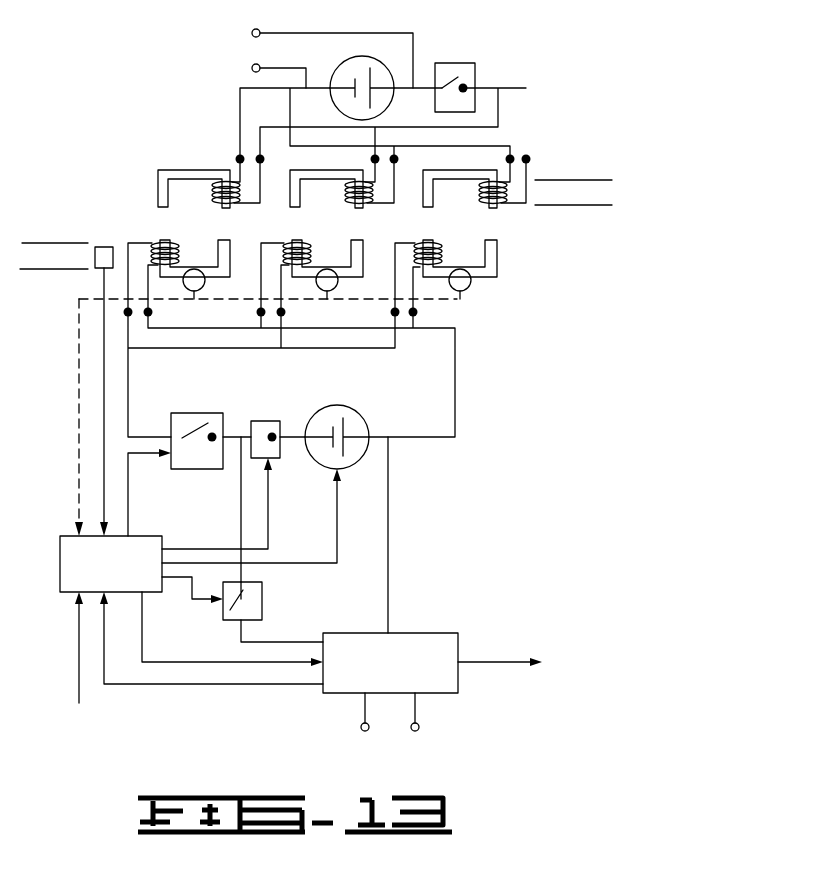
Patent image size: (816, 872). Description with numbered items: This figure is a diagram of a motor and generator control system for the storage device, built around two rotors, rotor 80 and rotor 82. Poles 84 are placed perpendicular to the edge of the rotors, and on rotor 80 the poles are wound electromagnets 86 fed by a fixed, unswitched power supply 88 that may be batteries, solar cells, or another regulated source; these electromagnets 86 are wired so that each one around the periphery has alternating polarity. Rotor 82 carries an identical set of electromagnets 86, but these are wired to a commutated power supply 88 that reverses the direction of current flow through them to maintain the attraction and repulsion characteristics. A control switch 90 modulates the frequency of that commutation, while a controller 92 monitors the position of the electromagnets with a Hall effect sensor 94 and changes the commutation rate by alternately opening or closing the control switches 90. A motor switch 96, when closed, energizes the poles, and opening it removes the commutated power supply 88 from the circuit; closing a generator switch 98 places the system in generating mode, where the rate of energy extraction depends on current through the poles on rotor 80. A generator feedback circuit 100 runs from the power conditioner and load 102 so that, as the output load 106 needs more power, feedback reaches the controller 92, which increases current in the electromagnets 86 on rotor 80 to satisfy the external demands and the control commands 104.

The rotor 80 is at (572, 182).
The rotor 82 is at (57, 242).
The poles 84 is at (223, 240).
The wound electromagnets 86 is at (199, 174).
The power supply 88 is at (365, 62).
The control switch 90 is at (471, 80).
The controller 92 is at (67, 581).
The Hall effect sensor 94 is at (97, 246).
The motor switch 96 is at (263, 423).
The generator switch 98 is at (255, 608).
The generator feedback circuit 100 is at (251, 68).
The power conditioner and load 102 is at (444, 644).
The control commands 104 is at (79, 672).
The output load 106 is at (371, 732).